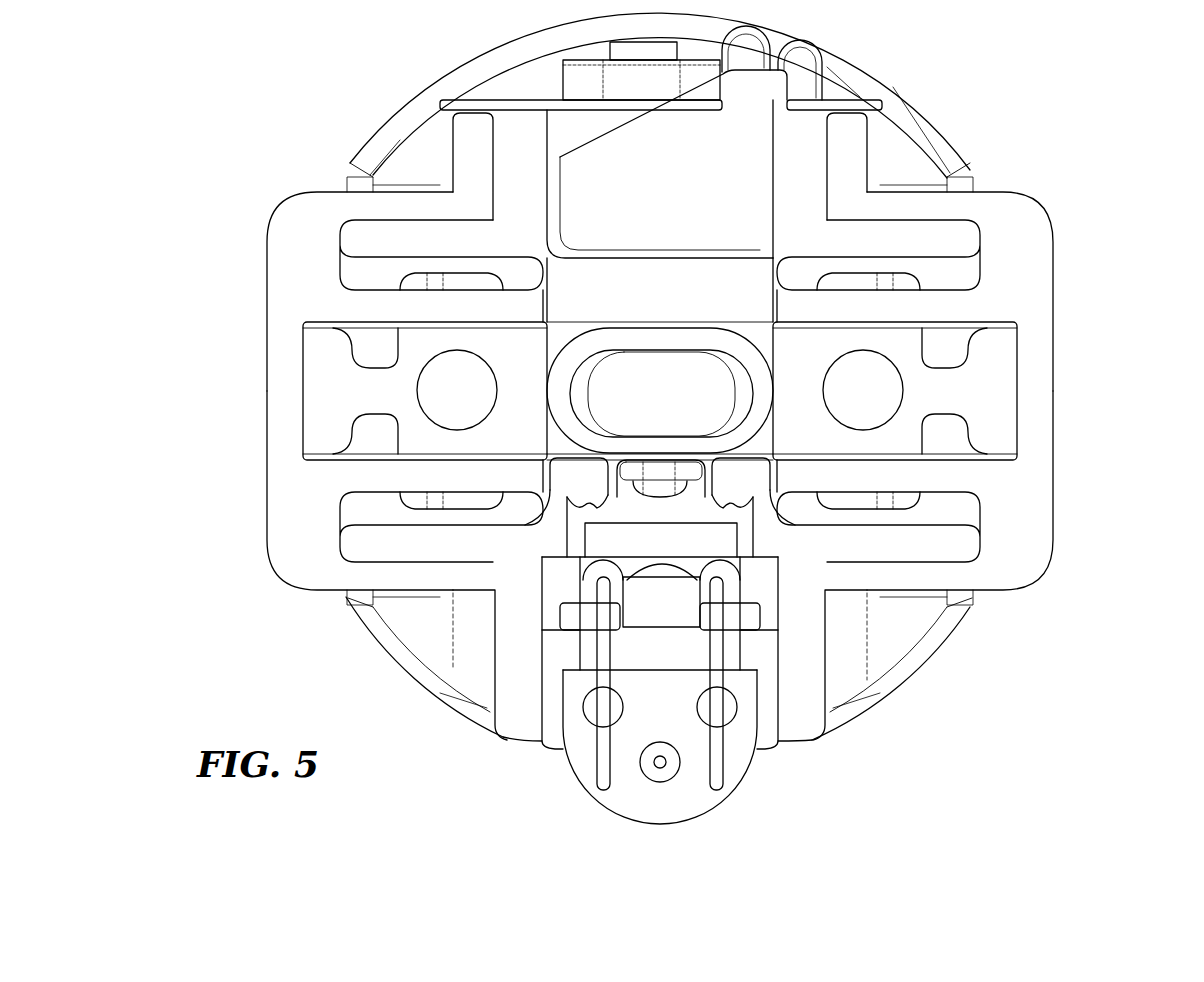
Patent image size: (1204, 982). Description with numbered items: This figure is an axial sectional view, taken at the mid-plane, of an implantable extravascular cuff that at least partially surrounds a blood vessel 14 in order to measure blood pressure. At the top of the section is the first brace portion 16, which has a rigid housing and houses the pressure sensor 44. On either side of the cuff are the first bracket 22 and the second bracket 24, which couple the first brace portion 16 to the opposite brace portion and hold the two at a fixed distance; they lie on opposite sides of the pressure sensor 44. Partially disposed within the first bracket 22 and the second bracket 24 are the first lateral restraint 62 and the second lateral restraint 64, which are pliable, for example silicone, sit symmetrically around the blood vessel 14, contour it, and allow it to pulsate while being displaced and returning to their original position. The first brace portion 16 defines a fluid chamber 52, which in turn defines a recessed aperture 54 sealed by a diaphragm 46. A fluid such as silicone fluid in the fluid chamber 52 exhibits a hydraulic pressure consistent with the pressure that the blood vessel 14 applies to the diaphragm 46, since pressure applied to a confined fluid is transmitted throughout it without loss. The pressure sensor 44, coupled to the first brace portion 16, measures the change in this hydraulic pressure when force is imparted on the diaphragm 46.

The blood vessel 14 is at (722, 343).
The first brace portion 16 is at (470, 710).
The first bracket 22 is at (270, 237).
The second bracket 24 is at (1057, 382).
The pressure sensor 44 is at (667, 603).
The diaphragm 46 is at (710, 476).
The fluid chamber 52 is at (625, 653).
The recessed aperture 54 is at (750, 638).
The first lateral restraint 62 is at (350, 388).
The second lateral restraint 64 is at (903, 347).